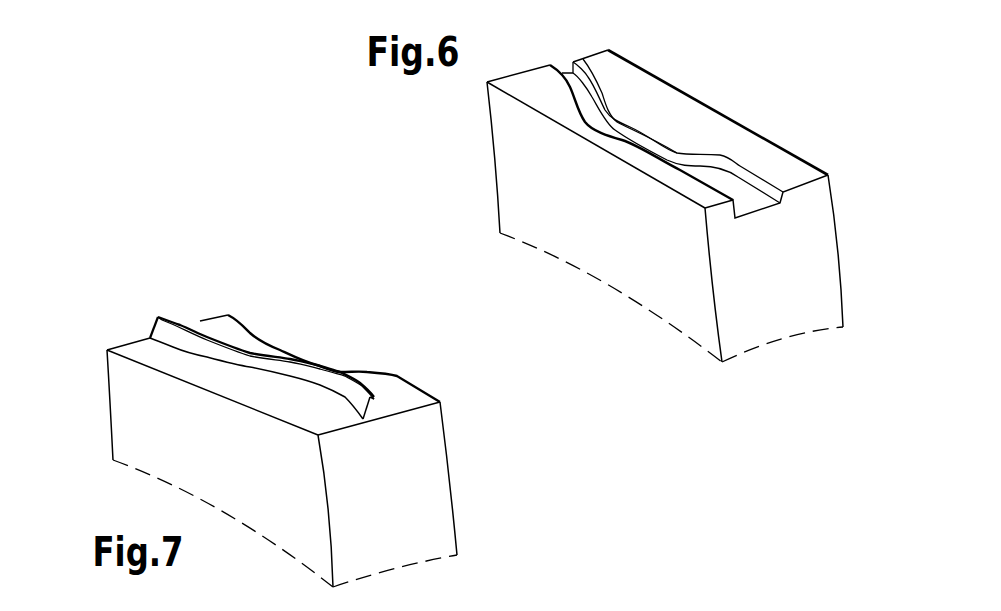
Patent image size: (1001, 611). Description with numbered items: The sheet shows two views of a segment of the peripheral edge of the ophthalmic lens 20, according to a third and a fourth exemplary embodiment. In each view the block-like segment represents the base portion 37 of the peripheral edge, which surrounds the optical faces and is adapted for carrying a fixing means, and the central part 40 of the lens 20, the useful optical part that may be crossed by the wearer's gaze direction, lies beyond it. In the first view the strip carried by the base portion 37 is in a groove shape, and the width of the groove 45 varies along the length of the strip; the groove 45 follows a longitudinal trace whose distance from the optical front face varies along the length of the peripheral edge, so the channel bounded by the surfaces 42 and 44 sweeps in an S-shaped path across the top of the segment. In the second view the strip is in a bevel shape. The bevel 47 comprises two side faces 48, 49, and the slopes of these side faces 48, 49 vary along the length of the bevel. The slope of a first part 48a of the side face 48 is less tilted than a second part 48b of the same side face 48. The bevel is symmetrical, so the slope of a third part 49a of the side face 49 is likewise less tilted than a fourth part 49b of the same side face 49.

In FIG. 6, the ophthalmic lens 20 is at (488, 169).
In FIG. 7, the ophthalmic lens 20 is at (102, 412).
In FIG. 6, the base portion 37 is at (798, 183).
In FIG. 7, the base portion 37 is at (415, 403).
In FIG. 6, the central part 40 is at (827, 288).
In FIG. 7, the central part 40 is at (437, 467).
In FIG. 6, the contact surface 42 is at (707, 123).
In FIG. 6, the rib top surface 44 is at (646, 93).
In FIG. 6, the groove 45 is at (743, 198).
In FIG. 7, the bevel 47 is at (321, 361).
In FIG. 7, the side face 48 is at (168, 333).
In FIG. 7, the first part of the side face 48a is at (153, 328).
In FIG. 7, the second part of the side face 48b is at (360, 410).
In FIG. 7, the side face 49 is at (202, 335).
In FIG. 7, the third part of the side face 49a is at (180, 322).
In FIG. 7, the fourth part of the side face 49b is at (349, 417).